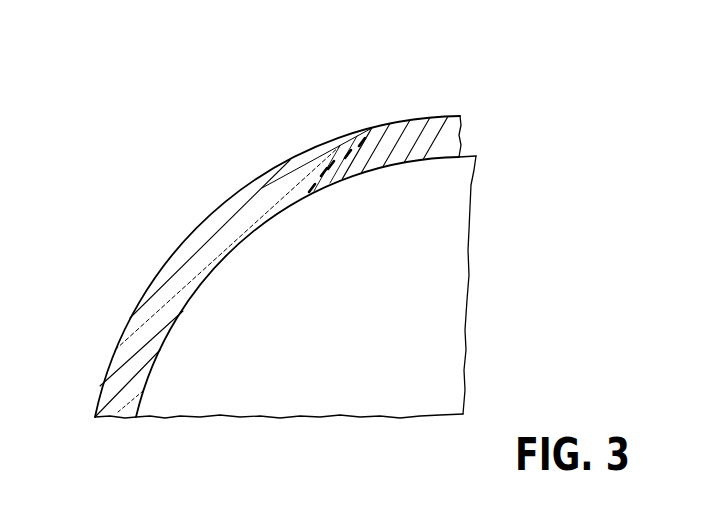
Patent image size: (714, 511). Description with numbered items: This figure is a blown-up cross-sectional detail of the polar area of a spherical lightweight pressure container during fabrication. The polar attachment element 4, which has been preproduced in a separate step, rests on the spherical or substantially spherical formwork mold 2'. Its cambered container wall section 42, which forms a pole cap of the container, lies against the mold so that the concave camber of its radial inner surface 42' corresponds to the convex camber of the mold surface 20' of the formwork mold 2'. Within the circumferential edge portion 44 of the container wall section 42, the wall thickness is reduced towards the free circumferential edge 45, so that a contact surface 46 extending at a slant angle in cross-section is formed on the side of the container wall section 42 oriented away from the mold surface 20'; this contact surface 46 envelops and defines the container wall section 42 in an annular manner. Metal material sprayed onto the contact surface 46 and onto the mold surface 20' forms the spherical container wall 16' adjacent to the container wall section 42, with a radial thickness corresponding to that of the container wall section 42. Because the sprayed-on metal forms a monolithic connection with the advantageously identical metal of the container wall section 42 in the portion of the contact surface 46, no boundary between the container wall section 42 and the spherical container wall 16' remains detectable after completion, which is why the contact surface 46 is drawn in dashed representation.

The polar attachment element 4 is at (447, 88).
The container wall section 42 is at (277, 215).
The radial inner surface 42' is at (502, 192).
The mold surface 20' is at (528, 133).
The circumferential edge portion 44 is at (380, 181).
The free circumferential edge 45 is at (303, 206).
The contact surface 46 is at (327, 162).
The spherical container wall 16' is at (111, 327).
The formwork mold 2' is at (330, 287).